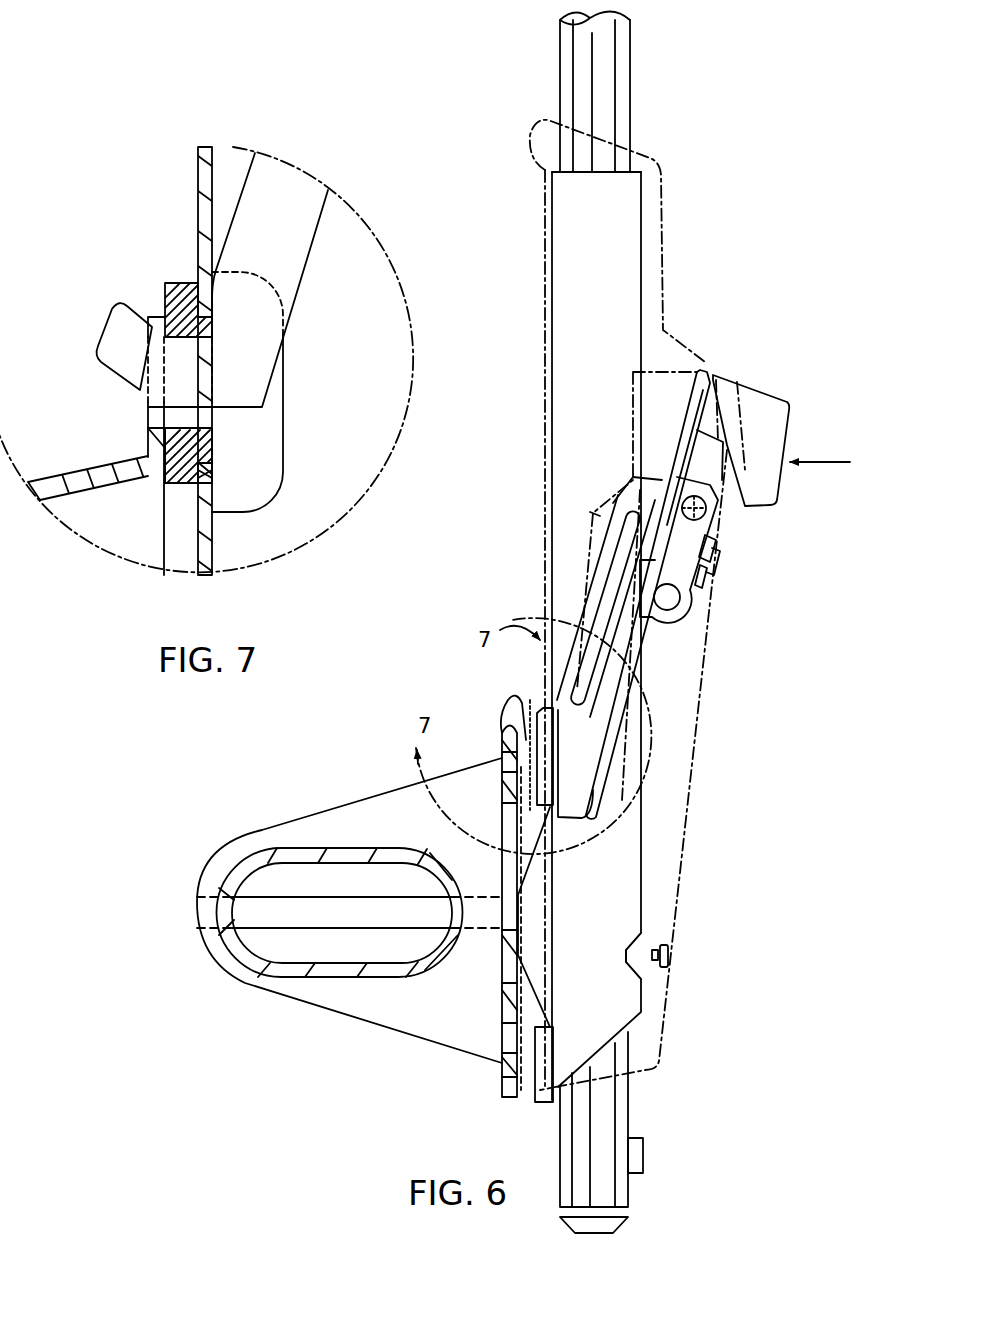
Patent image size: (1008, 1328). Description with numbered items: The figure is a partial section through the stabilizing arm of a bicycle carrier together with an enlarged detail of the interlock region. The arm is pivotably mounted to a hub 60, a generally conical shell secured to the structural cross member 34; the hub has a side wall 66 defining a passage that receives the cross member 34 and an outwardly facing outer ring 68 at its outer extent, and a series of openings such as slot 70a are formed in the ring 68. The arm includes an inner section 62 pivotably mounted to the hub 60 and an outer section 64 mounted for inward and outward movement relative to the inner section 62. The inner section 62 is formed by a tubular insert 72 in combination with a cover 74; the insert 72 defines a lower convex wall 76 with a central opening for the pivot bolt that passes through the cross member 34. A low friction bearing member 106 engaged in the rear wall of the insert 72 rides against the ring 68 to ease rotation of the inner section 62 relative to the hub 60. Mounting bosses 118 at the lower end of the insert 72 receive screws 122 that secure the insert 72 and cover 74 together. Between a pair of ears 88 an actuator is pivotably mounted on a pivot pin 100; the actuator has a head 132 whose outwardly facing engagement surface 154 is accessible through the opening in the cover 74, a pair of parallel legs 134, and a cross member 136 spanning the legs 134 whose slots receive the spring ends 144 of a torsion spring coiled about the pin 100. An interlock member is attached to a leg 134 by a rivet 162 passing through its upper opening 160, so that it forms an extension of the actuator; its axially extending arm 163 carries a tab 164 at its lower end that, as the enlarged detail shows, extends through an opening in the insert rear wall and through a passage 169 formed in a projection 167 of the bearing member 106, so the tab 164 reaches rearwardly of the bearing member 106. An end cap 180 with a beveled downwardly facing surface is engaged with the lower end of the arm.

In FIG. 6, the structural cross member 34 is at (332, 980).
In FIG. 6, the hub 60 is at (336, 787).
In FIG. 6, the inner section 62 is at (712, 738).
In FIG. 6, the outer section 64 is at (640, 52).
In FIG. 7, the side wall 66 is at (60, 478).
In FIG. 7, the outer ring 68 is at (147, 437).
In FIG. 6, the outer ring 68 is at (502, 1085).
In FIG. 7, the slot 70a is at (150, 425).
In FIG. 6, the insert 72 is at (648, 222).
In FIG. 6, the cover 74 is at (665, 195).
In FIG. 6, the lower convex wall 76 is at (545, 980).
In FIG. 6, the ears 88 is at (655, 625).
In FIG. 6, the pivot pin 100 is at (690, 622).
In FIG. 7, the bearing member 106 is at (180, 280).
In FIG. 6, the mounting boss 118 is at (645, 934).
In FIG. 6, the screw 122 is at (670, 958).
In FIG. 6, the head 132 is at (708, 378).
In FIG. 6, the leg 134 is at (690, 468).
In FIG. 6, the cross member 136 is at (716, 552).
In FIG. 6, the spring end 144 is at (705, 590).
In FIG. 6, the engagement surface 154 is at (790, 415).
In FIG. 6, the upper opening 160 is at (720, 574).
In FIG. 6, the rivet 162 is at (708, 514).
In FIG. 7, the arm 163 is at (250, 150).
In FIG. 6, the arm 163 is at (587, 597).
In FIG. 7, the tab 164 is at (108, 325).
In FIG. 6, the tab 164 is at (506, 712).
In FIG. 7, the projection 167 is at (213, 470).
In FIG. 7, the passage 169 is at (185, 432).
In FIG. 6, the end cap 180 is at (632, 1220).